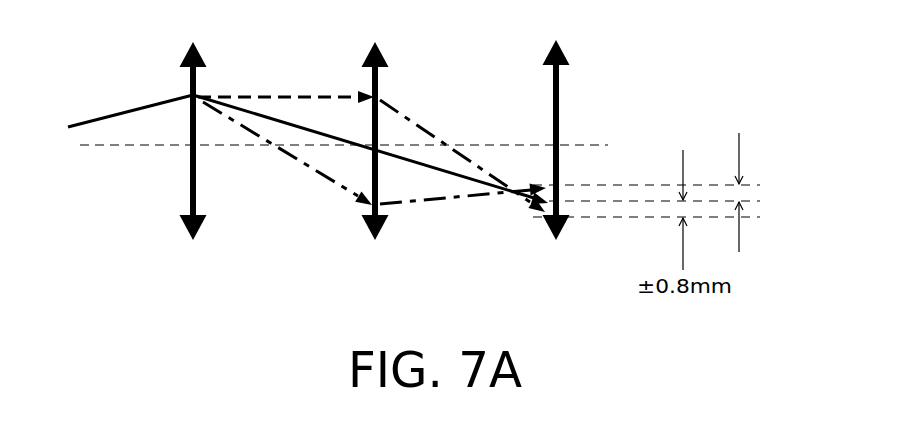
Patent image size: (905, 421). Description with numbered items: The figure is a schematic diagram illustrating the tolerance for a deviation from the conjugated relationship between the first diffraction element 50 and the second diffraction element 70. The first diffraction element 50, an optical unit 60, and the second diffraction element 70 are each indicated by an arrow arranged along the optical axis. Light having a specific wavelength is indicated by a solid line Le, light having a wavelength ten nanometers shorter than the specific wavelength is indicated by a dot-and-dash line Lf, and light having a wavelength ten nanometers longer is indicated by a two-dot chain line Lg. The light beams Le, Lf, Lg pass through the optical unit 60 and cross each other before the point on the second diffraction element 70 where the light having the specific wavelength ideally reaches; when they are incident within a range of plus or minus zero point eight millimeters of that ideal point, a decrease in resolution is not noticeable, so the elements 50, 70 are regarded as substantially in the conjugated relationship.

The first diffraction element 50 is at (192, 157).
The optical unit 60 is at (374, 157).
The second diffraction element 70 is at (555, 156).
The solid line Le is at (282, 119).
The dot-and-dash line Lf is at (337, 96).
The two-dot chain line Lg is at (318, 173).